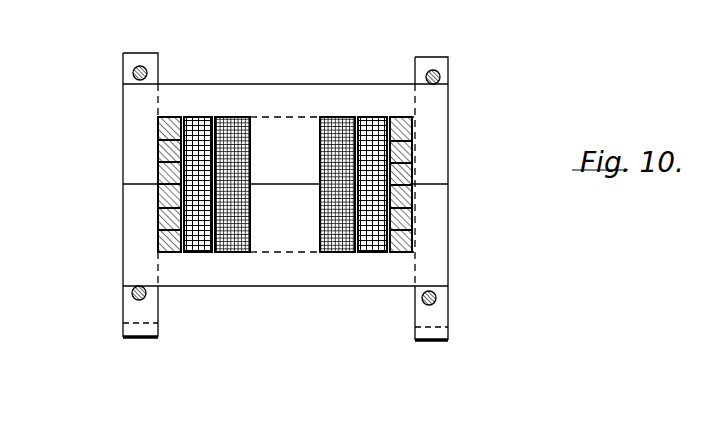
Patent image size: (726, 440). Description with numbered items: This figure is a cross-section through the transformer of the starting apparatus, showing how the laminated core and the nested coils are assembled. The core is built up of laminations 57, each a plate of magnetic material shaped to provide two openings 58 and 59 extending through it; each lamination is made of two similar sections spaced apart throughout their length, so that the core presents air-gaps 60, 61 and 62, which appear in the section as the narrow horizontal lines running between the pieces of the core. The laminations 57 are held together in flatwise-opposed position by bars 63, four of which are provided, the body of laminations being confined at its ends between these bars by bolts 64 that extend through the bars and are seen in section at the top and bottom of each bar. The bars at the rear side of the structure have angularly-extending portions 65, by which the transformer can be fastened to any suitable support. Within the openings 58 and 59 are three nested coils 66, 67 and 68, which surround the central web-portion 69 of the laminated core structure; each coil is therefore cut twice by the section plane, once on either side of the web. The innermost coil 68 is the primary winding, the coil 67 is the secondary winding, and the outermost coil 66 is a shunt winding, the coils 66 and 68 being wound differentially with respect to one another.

The laminations 57 is at (285, 104).
The opening 58 is at (247, 117).
The opening 59 is at (375, 117).
The air-gap 60 is at (136, 184).
The air-gap 61 is at (284, 183).
The air-gap 62 is at (428, 185).
The bars 63 is at (146, 60).
The bolts 64 is at (132, 72).
The angularly-extending portions 65 is at (158, 334).
The shunt winding coil 66 is at (230, 117).
The secondary winding coil 67 is at (198, 117).
The primary winding coil 68 is at (170, 117).
The central web-portion 69 is at (285, 231).